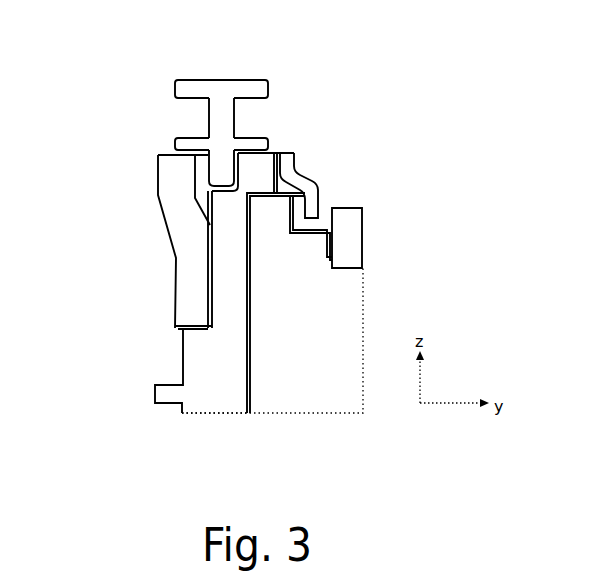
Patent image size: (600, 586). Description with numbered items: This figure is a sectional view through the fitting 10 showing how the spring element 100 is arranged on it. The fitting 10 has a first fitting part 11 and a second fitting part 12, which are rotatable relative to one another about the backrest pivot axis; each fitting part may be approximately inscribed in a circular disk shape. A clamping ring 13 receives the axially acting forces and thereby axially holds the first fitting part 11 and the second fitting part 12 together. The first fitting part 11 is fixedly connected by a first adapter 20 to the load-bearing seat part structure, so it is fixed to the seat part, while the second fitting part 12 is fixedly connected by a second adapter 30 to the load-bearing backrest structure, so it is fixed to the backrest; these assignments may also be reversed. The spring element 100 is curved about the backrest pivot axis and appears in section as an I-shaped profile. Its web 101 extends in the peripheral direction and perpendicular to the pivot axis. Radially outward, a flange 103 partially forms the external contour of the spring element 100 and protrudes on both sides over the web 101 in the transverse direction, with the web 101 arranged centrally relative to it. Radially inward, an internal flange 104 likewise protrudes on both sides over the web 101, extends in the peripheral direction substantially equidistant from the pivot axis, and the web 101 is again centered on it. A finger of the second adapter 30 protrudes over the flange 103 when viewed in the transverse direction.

The fitting 10 is at (272, 357).
The first fitting part 11 is at (220, 383).
The second fitting part 12 is at (295, 383).
The clamping ring 13 is at (312, 178).
The first adapter 20 is at (190, 273).
The second adapter 30 is at (353, 238).
The spring element 100 is at (209, 112).
The web 101 is at (236, 119).
The flange 103 is at (222, 80).
The internal flange 104 is at (268, 148).